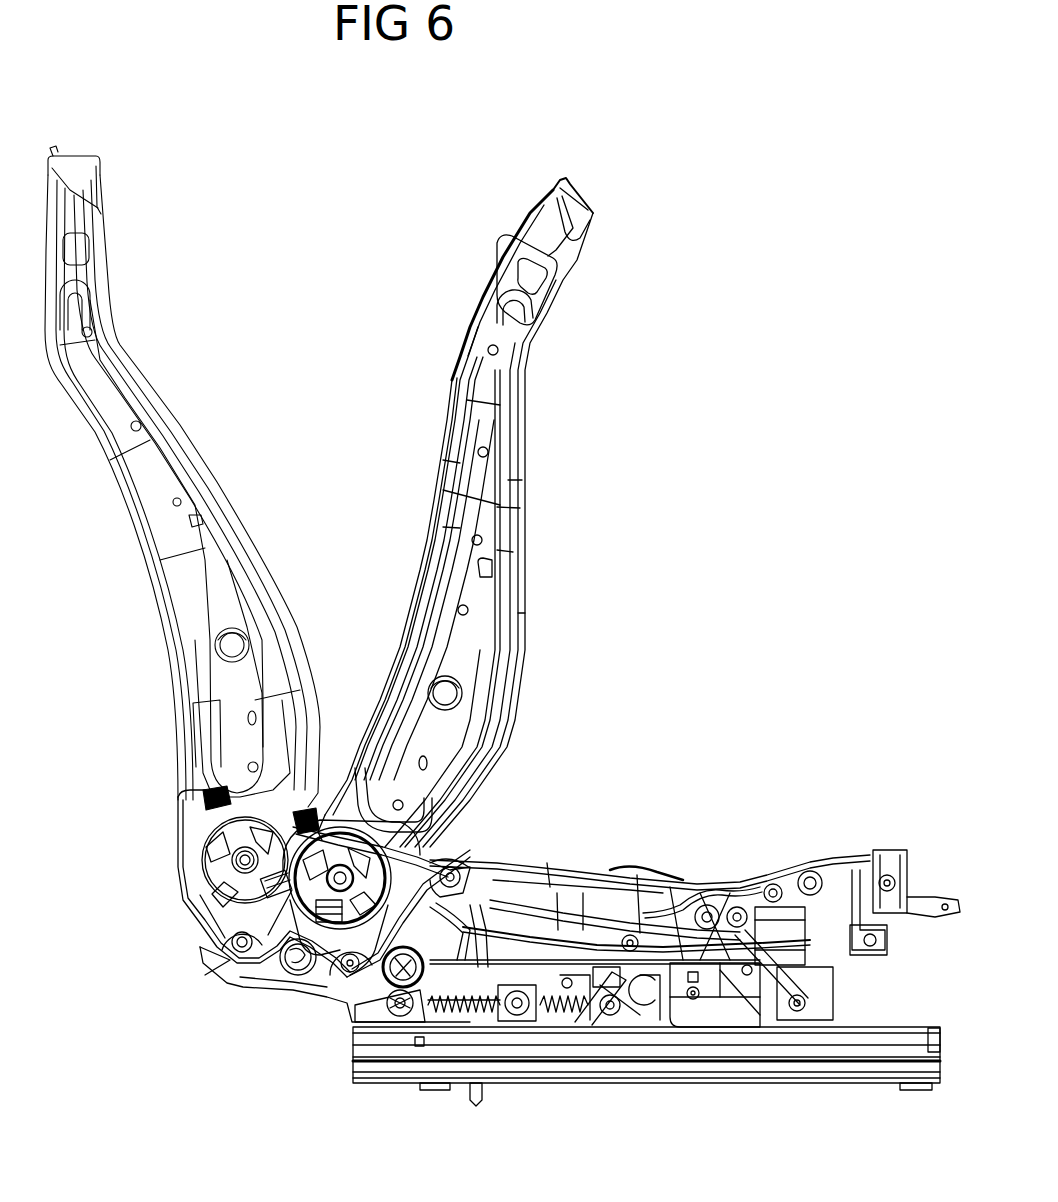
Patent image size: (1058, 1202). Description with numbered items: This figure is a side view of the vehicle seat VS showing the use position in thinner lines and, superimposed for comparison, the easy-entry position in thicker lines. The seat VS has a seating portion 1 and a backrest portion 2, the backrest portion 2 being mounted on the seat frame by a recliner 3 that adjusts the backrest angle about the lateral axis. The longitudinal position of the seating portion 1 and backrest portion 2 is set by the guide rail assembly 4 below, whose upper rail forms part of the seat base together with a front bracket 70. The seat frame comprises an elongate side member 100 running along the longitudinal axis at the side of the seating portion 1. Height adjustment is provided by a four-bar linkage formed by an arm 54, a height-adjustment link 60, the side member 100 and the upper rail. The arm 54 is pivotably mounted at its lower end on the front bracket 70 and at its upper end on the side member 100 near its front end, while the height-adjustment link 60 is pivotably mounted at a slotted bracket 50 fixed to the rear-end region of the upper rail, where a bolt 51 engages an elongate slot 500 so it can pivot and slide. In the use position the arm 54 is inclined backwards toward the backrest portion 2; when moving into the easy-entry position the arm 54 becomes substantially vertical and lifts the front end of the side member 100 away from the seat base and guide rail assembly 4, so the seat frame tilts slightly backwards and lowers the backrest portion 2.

The vehicle seat VS is at (608, 433).
The seating portion 1 is at (600, 858).
The backrest portion 2 is at (548, 643).
The recliner 3 is at (207, 878).
The guide rail assembly 4 is at (660, 1083).
The slotted bracket 50 is at (518, 1015).
The bolt 51 is at (402, 1010).
The arm 54 is at (767, 983).
The height-adjustment link 60 is at (478, 967).
The front bracket 70 is at (727, 1012).
The side member 100 is at (763, 923).
The elongate slot 500 is at (458, 1010).